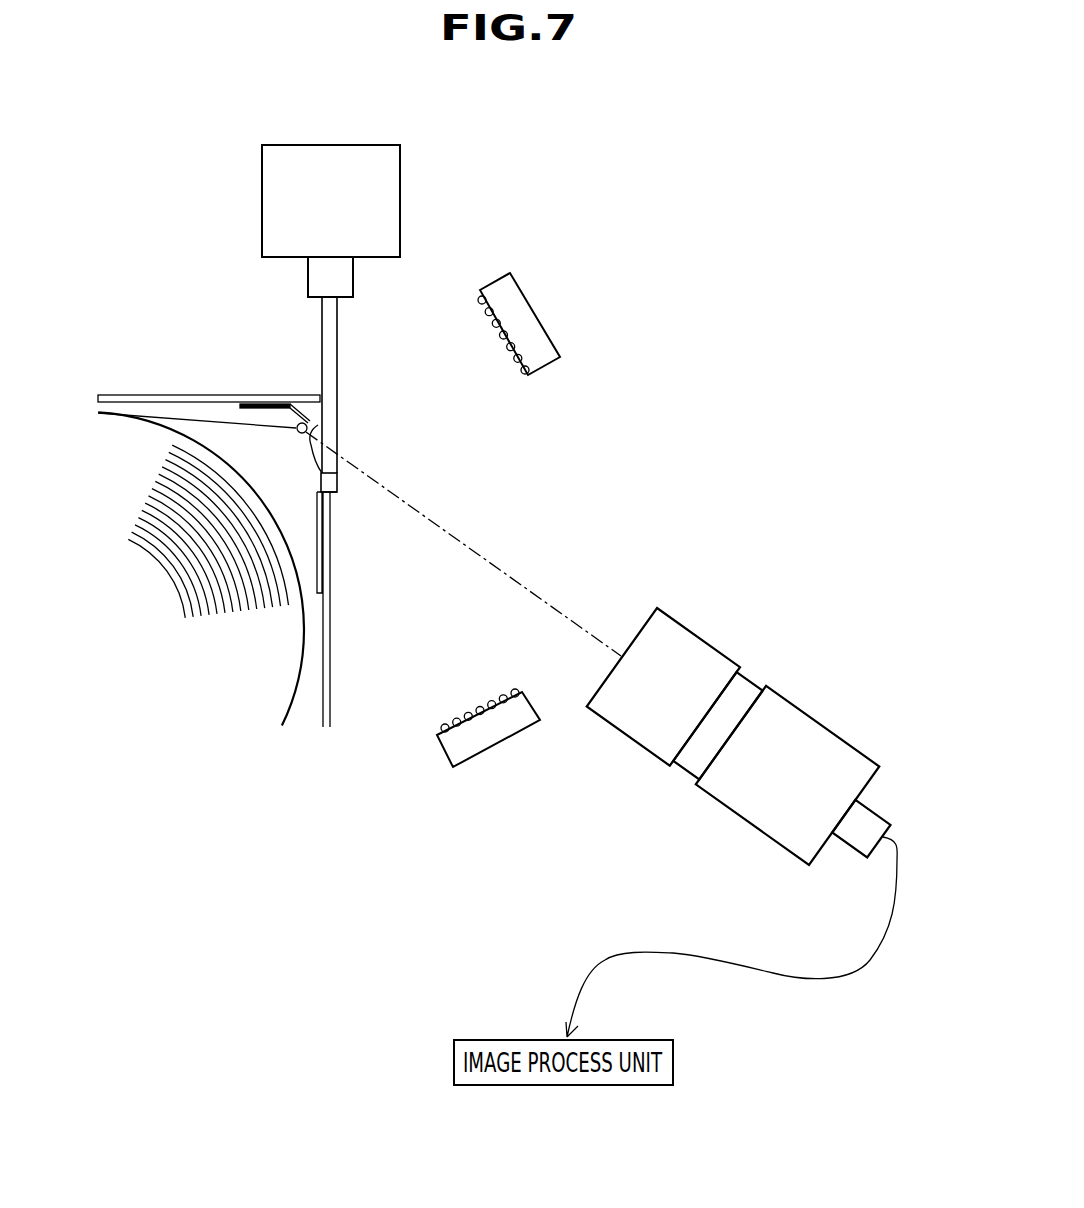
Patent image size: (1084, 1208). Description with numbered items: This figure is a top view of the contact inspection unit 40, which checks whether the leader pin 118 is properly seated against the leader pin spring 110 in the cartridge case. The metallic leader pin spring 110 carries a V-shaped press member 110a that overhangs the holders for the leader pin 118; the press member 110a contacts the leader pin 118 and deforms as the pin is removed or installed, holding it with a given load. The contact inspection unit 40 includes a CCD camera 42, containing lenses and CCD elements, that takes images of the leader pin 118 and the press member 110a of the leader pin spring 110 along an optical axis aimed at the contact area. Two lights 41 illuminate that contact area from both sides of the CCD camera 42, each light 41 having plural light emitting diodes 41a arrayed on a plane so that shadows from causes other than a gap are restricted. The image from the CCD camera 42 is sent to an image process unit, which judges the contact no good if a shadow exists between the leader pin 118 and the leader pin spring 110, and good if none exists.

The contact inspection unit 40 is at (637, 529).
The light 41 is at (490, 282).
The light emitting diode 41a is at (517, 366).
The CCD camera 42 is at (790, 700).
The leader pin spring 110 is at (250, 404).
The press member 110a is at (318, 420).
The leader pin 118 is at (337, 478).